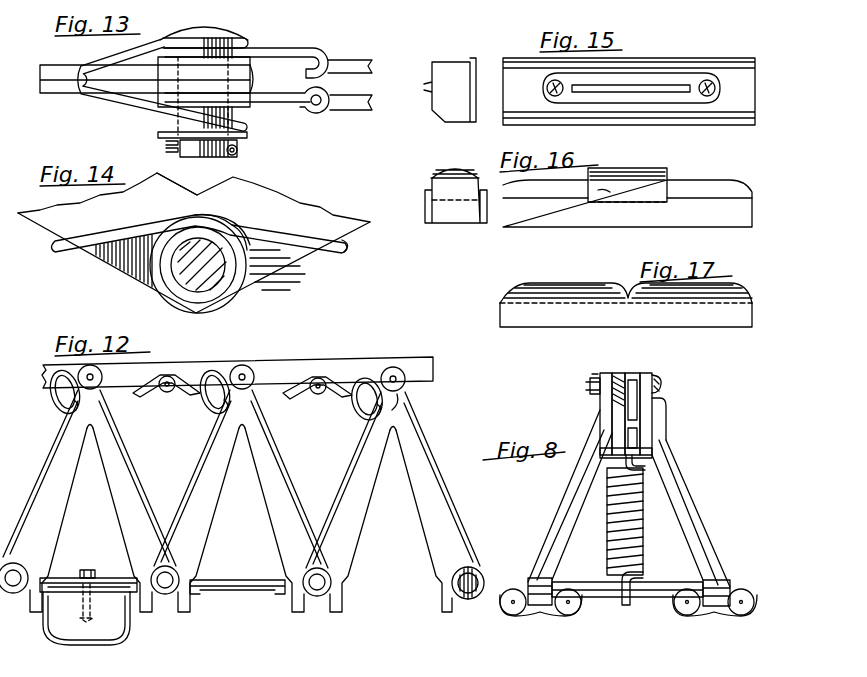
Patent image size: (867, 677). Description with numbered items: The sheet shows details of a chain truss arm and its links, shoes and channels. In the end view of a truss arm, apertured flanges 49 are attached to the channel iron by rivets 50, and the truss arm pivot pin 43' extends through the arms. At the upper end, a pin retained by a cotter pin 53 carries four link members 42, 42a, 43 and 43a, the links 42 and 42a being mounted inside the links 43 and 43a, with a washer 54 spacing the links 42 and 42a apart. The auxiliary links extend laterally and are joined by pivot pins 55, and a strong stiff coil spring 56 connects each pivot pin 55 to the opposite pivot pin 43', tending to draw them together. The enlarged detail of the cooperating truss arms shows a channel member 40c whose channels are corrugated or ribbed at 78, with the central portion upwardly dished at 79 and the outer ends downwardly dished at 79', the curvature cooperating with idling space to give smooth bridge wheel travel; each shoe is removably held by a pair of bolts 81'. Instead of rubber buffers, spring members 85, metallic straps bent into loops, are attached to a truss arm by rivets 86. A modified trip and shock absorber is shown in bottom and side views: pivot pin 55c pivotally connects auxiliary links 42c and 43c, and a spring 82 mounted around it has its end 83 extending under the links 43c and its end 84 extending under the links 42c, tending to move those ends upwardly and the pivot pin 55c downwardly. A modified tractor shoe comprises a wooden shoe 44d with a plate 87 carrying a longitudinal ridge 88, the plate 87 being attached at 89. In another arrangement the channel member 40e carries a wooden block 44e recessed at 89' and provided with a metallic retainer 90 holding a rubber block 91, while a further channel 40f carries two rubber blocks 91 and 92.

In FIG. 13, the auxiliary link 42c is at (72, 83).
In FIG. 14, the auxiliary link 42c is at (128, 268).
In FIG. 13, the spring 82 is at (120, 108).
In FIG. 14, the spring 82 is at (285, 235).
In FIG. 12, the spring 82 is at (172, 372).
In FIG. 13, the spring end 84 is at (305, 115).
In FIG. 14, the spring end 84 is at (92, 236).
In FIG. 13, the auxiliary link 43c is at (345, 68).
In FIG. 14, the auxiliary link 43c is at (285, 258).
In FIG. 14, the pivot pin 55 is at (207, 138).
In FIG. 8, the pivot pin 55 is at (655, 452).
In FIG. 14, the pivot pin 55c is at (205, 258).
In FIG. 12, the pivot pin 55c is at (167, 393).
In FIG. 14, the spring end 83 is at (352, 247).
In FIG. 15, the wooden shoe 44d is at (442, 70).
In FIG. 15, the plate 87 is at (650, 78).
In FIG. 15, the longitudinal ridge 88 is at (680, 93).
In FIG. 15, the attachment points 89 is at (629, 113).
In FIG. 16, the recess 89' is at (607, 156).
In FIG. 16, the rubber block 91 is at (453, 170).
In FIG. 17, the rubber block 91 is at (570, 290).
In FIG. 16, the metallic retainer 90 is at (640, 192).
In FIG. 16, the wooden block 44e is at (682, 192).
In FIG. 16, the channel member 40e is at (712, 208).
In FIG. 17, the channel 40f is at (736, 327).
In FIG. 17, the rubber block 92 is at (730, 290).
In FIG. 12, the spring member 85 is at (217, 375).
In FIG. 12, the rivet 86 is at (395, 402).
In FIG. 12, the ribs 78 is at (70, 577).
In FIG. 12, the upwardly dished central portion 79 is at (160, 564).
In FIG. 12, the downwardly dished outer ends 79' is at (168, 606).
In FIG. 12, the bolts 81' is at (95, 557).
In FIG. 12, the channel member 40c is at (137, 616).
In FIG. 8, the link member 43 is at (570, 476).
In FIG. 8, the link member 43a is at (650, 378).
In FIG. 8, the link member 42 is at (622, 372).
In FIG. 8, the link member 42a is at (640, 376).
In FIG. 8, the cotter pin 53 is at (590, 381).
In FIG. 8, the washer 54 is at (648, 400).
In FIG. 8, the coil spring 56 is at (640, 510).
In FIG. 8, the pivot pin 43' is at (627, 581).
In FIG. 8, the rivets 50 is at (510, 612).
In FIG. 8, the apertured flanges 49 is at (575, 618).